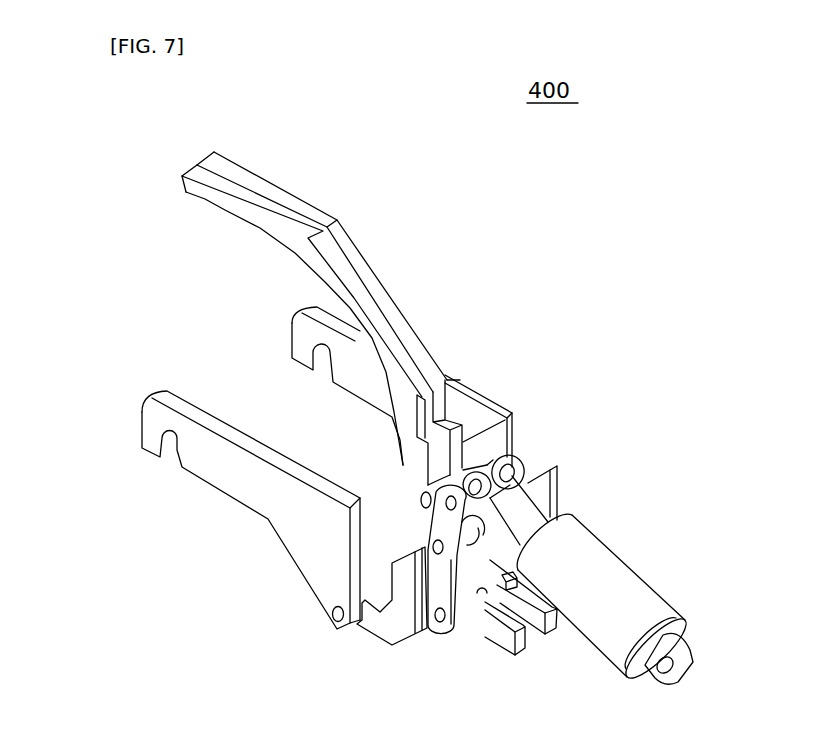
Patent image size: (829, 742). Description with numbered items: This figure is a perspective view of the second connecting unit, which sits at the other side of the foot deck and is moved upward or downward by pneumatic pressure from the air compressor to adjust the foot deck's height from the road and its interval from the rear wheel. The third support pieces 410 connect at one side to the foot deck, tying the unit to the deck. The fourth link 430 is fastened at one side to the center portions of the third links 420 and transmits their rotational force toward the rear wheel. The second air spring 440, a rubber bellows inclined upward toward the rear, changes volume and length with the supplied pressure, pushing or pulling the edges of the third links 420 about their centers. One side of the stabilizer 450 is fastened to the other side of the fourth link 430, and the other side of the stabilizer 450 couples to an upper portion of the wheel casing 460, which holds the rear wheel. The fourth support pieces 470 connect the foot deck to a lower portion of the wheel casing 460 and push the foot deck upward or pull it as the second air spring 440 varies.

The third support pieces 410 is at (503, 647).
The third links 420 is at (440, 630).
The fourth link 430 is at (483, 522).
The second air spring 440 is at (637, 580).
The stabilizers 450 is at (400, 320).
The wheel casing 460 is at (233, 495).
The fourth support pieces 470 is at (372, 632).